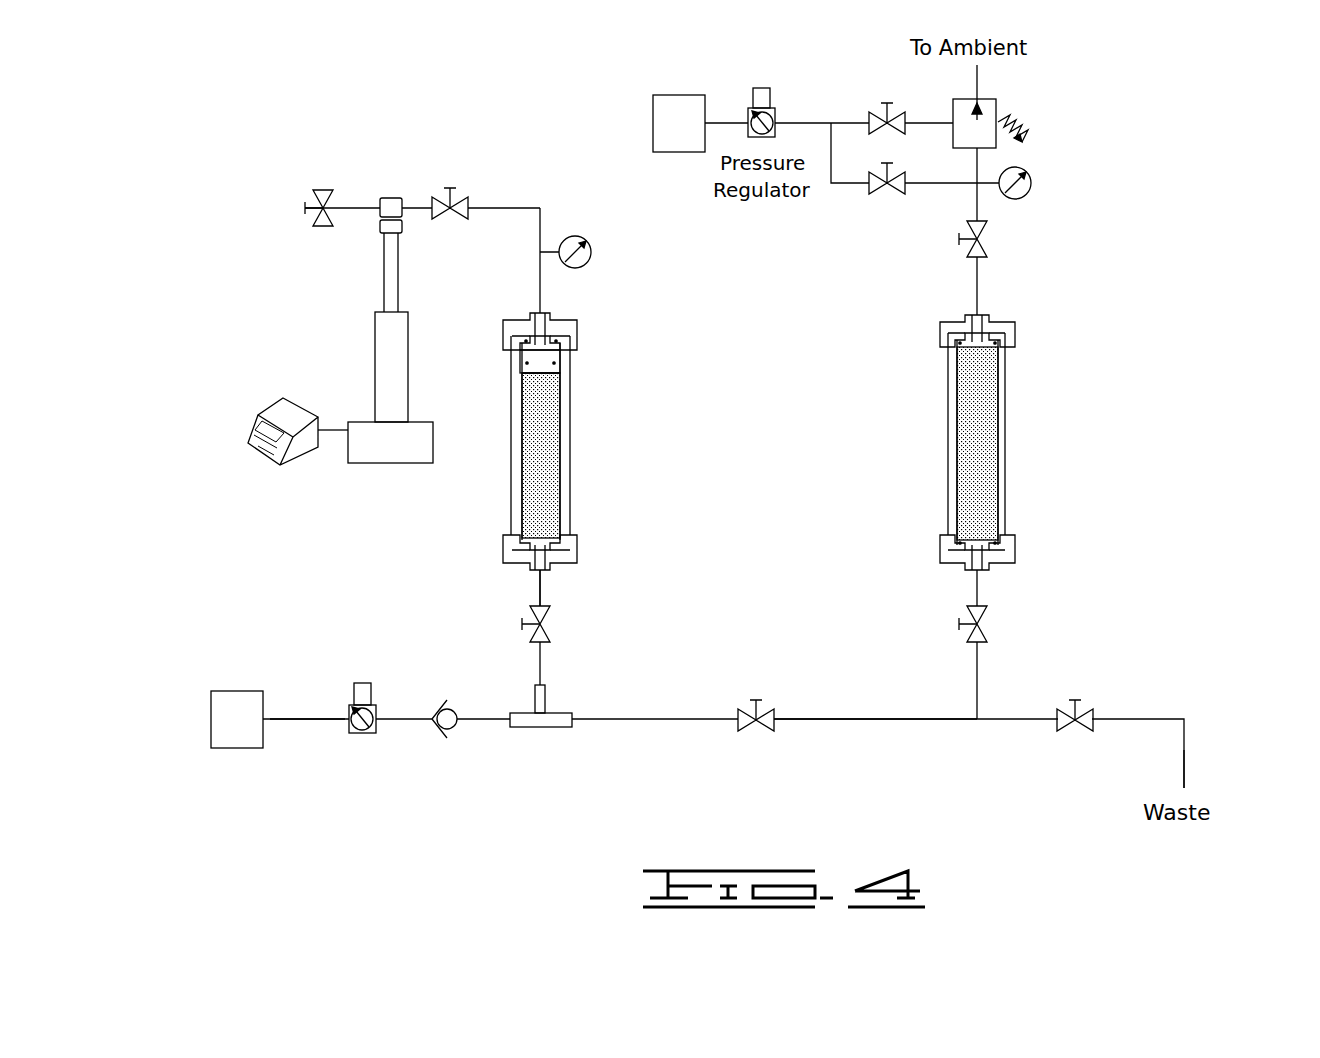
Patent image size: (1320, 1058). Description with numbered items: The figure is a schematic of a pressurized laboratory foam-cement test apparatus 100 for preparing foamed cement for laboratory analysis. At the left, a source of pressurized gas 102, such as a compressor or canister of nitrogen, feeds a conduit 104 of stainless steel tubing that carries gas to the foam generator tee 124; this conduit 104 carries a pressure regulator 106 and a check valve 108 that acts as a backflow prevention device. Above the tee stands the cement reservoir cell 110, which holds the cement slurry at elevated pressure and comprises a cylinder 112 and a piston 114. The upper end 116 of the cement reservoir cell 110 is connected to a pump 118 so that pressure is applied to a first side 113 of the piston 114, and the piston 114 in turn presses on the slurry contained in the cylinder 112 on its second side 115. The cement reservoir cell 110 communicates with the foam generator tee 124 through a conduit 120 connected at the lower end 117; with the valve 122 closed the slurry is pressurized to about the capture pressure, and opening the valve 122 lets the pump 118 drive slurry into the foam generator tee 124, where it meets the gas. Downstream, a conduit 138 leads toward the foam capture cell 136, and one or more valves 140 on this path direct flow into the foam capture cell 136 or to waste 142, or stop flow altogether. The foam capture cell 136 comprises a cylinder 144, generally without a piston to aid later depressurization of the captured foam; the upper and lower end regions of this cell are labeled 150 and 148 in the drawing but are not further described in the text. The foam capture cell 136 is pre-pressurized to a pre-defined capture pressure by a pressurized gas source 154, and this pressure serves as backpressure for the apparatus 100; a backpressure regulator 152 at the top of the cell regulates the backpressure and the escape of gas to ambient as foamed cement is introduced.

The apparatus 100 is at (243, 118).
The source of pressurized gas 102 is at (210, 718).
The conduit 104 is at (303, 715).
The pressure regulator 106 is at (352, 735).
The check valve 108 is at (448, 738).
The cement reservoir cell 110 is at (545, 435).
The cylinder 112 is at (572, 494).
The first side 113 is at (553, 343).
The piston 114 is at (528, 358).
The second side 115 is at (530, 378).
The upper end 116 is at (537, 313).
The lower end 117 is at (528, 562).
The pump 118 is at (365, 465).
The conduit 120 is at (545, 585).
The valve 122 is at (552, 635).
The foam generator tee 124 is at (552, 727).
The foam capture cell 136 is at (975, 440).
The conduit 138 is at (895, 718).
The valves 140 is at (745, 728).
The waste 142 is at (1184, 762).
The cylinder 144 is at (1007, 505).
The second column bottom cap 148 is at (975, 568).
The second column top cap 150 is at (990, 320).
The backpressure regulator 152 is at (1000, 105).
The pressurized gas source 154 is at (653, 105).